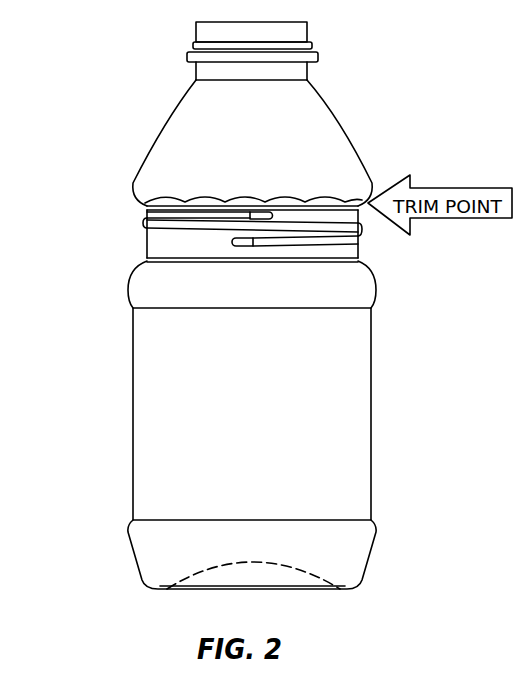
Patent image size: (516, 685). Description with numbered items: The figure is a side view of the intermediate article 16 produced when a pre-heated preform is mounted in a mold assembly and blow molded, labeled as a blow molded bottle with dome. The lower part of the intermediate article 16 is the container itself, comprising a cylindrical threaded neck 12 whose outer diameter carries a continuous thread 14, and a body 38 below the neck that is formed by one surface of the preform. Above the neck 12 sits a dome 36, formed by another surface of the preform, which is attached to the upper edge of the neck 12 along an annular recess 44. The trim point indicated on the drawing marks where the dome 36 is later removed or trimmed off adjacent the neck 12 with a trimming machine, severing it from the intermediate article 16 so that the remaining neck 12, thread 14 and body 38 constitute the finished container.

The threaded neck 12 is at (148, 250).
The continuous thread 14 is at (152, 216).
The intermediate article 16 is at (117, 422).
The dome 36 is at (342, 127).
The body 38 is at (372, 418).
The annular recess 44 is at (357, 261).